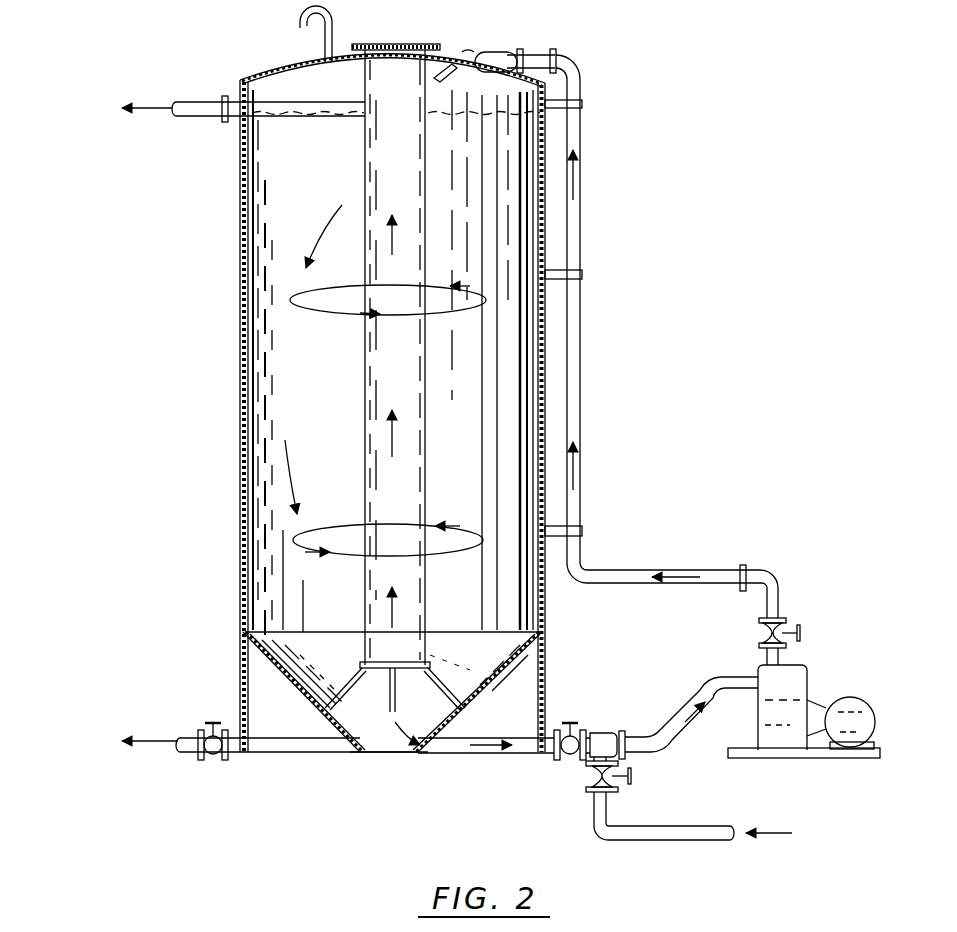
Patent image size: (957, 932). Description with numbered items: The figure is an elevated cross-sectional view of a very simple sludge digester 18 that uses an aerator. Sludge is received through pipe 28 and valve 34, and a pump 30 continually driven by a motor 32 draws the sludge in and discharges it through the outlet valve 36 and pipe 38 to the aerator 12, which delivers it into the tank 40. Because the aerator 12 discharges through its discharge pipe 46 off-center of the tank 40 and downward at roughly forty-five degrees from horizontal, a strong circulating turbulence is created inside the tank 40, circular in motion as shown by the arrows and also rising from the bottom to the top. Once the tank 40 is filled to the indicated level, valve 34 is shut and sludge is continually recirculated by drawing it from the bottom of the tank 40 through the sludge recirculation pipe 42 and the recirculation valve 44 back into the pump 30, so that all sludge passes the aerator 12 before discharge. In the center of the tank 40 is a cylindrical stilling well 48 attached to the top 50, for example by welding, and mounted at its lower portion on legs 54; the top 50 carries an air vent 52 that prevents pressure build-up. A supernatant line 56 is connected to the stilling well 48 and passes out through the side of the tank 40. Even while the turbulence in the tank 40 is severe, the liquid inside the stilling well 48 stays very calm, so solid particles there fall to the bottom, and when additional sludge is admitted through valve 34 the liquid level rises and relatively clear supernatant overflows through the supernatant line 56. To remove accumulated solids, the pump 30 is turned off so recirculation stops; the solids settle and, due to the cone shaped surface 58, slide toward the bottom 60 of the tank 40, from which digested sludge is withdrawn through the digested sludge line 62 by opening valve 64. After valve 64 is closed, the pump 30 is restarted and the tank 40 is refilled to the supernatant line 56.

The aerator 12 is at (490, 56).
The sludge digester 18 is at (614, 187).
The pipe 28 is at (678, 826).
The pump 30 is at (808, 683).
The motor 32 is at (875, 722).
The valve 34 is at (590, 779).
The outlet valve 36 is at (760, 633).
The pipe 38 is at (580, 228).
The tank 40 is at (240, 346).
The sludge recirculation pipe 42 is at (458, 754).
The recirculation valve 44 is at (583, 713).
The discharge pipe 46 is at (446, 80).
The stilling well 48 is at (365, 346).
The top 50 is at (285, 72).
The air vent 52 is at (326, 30).
The legs 54 is at (386, 668).
The supernatant line 56 is at (204, 101).
The cone shaped surface 58 is at (470, 664).
The bottom 60 is at (392, 754).
The digested sludge line 62 is at (303, 754).
The valve 64 is at (214, 754).